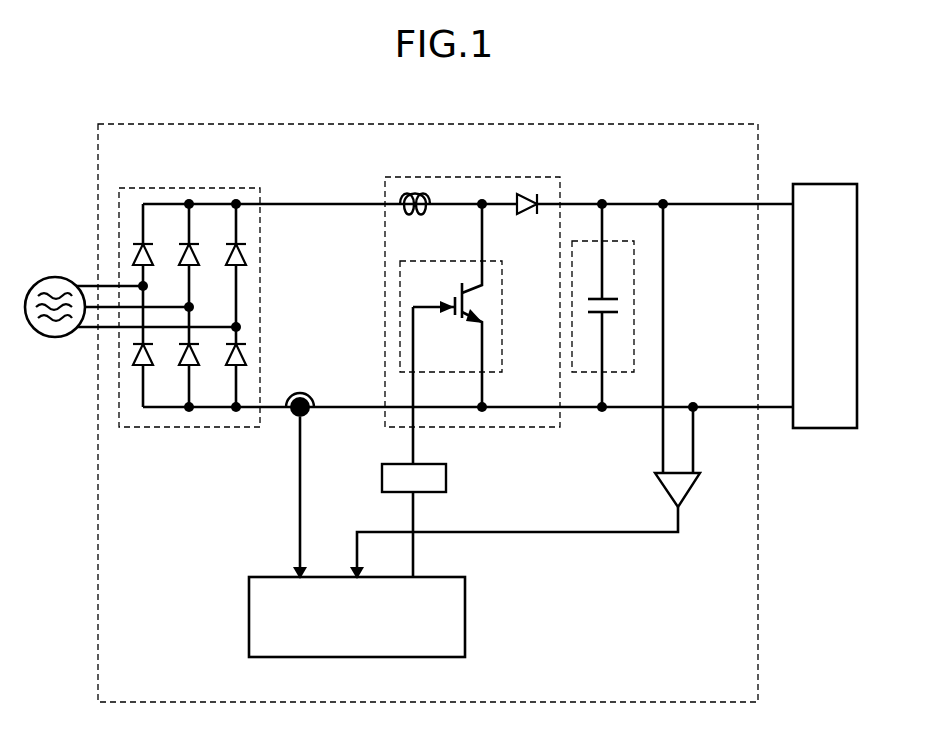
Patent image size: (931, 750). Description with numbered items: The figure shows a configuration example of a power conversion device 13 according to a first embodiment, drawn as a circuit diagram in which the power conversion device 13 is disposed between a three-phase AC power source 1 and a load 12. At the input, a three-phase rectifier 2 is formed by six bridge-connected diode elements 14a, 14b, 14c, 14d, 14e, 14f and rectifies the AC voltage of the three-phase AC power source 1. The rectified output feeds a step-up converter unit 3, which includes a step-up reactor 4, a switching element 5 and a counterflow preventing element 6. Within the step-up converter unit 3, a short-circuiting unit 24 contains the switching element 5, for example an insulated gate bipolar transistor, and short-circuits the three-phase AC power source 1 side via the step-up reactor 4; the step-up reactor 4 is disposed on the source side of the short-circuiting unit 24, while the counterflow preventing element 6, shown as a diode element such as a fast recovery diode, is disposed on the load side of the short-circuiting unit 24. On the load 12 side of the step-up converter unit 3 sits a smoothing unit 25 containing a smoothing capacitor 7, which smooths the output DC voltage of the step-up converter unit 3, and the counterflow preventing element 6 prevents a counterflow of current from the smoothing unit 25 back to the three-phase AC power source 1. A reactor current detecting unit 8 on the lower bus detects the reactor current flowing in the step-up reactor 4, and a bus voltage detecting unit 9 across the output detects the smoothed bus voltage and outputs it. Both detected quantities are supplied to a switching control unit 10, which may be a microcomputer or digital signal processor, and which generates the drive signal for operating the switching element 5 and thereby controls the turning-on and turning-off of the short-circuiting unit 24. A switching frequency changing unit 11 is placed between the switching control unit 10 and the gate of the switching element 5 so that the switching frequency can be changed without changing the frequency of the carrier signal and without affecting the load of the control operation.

The three-phase AC power source 1 is at (55, 277).
The three-phase rectifier 2 is at (262, 270).
The step-up converter unit 3 is at (548, 177).
The step-up reactor 4 is at (416, 196).
The switching element 5 is at (464, 318).
The counterflow preventing element 6 is at (520, 195).
The smoothing capacitor 7 is at (605, 316).
The reactor current detecting unit 8 is at (291, 416).
The bus voltage detecting unit 9 is at (694, 488).
The switching control unit 10 is at (433, 558).
The switching frequency changing unit 11 is at (430, 445).
The load 12 is at (832, 165).
The power conversion device 13 is at (722, 124).
The diode element 14a is at (137, 243).
The diode element 14b is at (183, 243).
The diode element 14c is at (230, 243).
The diode element 14d is at (137, 367).
The diode element 14e is at (183, 367).
The diode element 14f is at (230, 367).
The short-circuiting unit 24 is at (428, 261).
The smoothing unit 25 is at (620, 241).